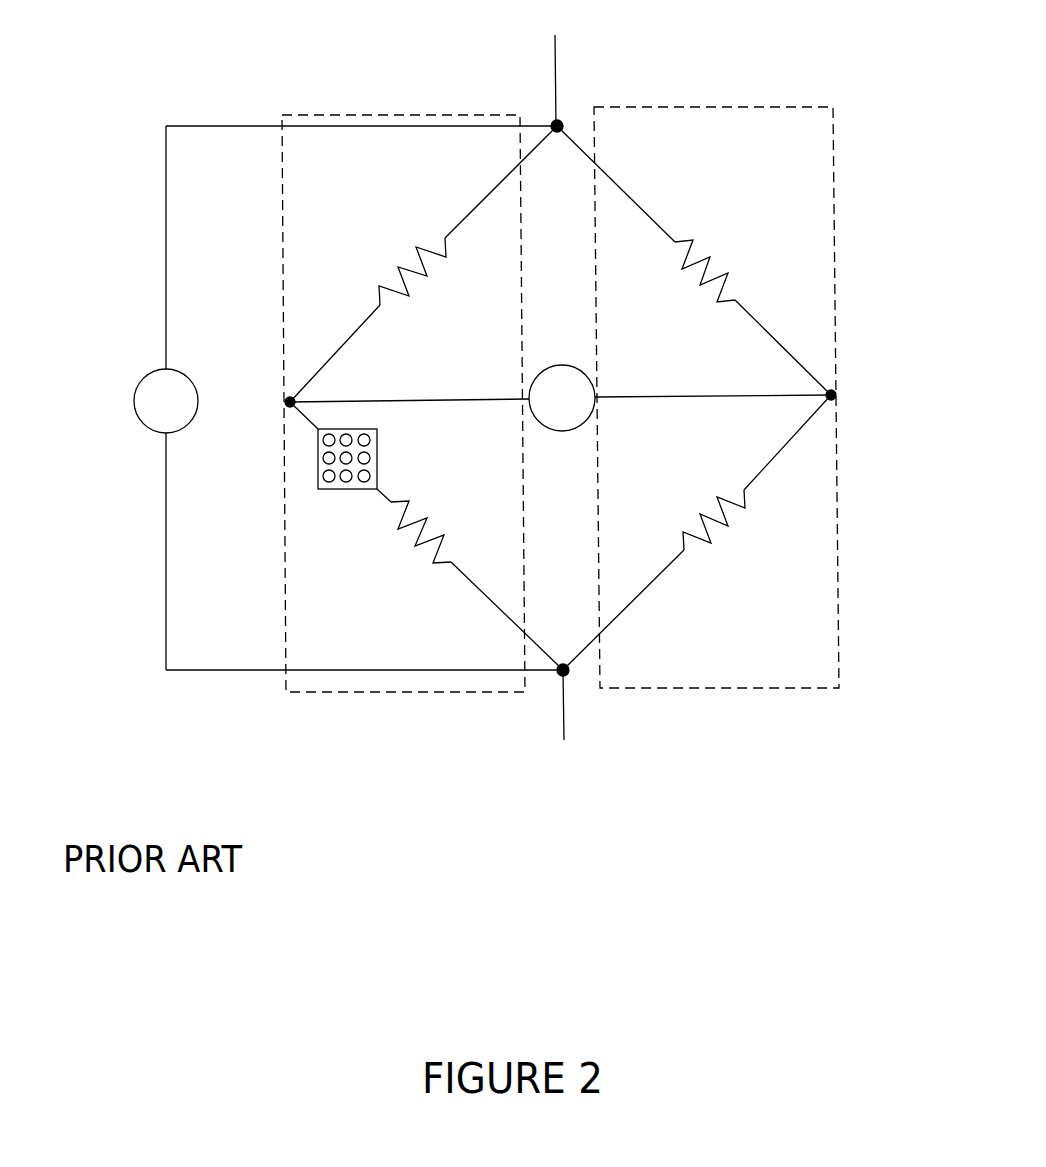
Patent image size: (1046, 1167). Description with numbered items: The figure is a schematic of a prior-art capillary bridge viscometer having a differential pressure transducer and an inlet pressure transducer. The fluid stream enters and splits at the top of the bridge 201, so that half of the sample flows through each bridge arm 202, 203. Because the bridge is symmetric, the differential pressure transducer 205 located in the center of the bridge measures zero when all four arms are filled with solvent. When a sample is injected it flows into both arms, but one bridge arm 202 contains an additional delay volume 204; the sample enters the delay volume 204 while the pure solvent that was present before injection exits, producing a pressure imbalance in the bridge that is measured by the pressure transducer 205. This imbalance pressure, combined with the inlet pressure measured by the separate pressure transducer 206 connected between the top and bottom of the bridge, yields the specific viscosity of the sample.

The top of the bridge 201 is at (547, 112).
The bridge arm 202 is at (376, 104).
The bridge arm 203 is at (727, 103).
The delay volume 204 is at (349, 502).
The pressure transducer 205 is at (573, 383).
The pressure transducer 206 is at (135, 437).